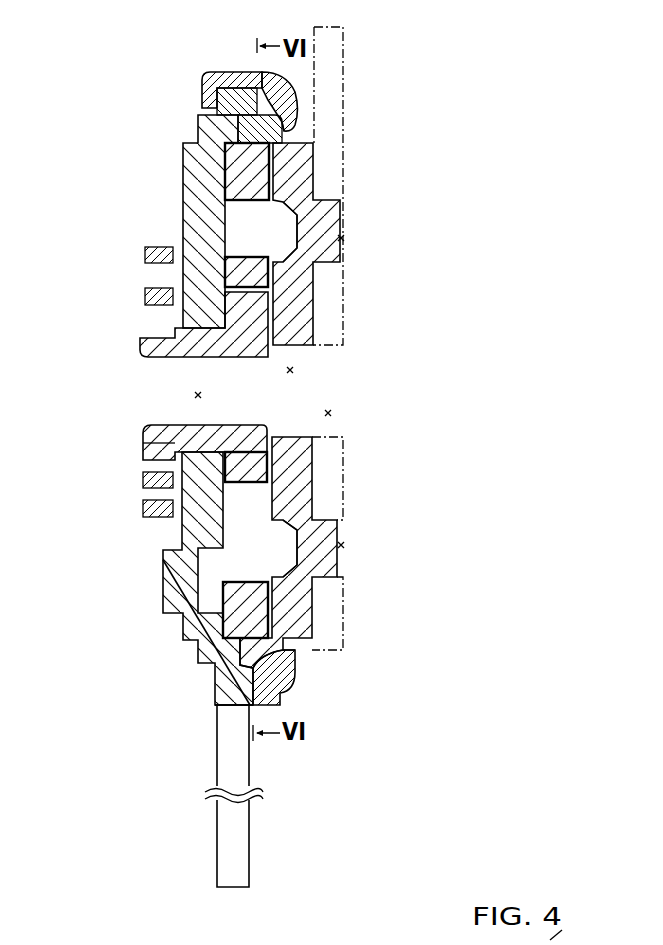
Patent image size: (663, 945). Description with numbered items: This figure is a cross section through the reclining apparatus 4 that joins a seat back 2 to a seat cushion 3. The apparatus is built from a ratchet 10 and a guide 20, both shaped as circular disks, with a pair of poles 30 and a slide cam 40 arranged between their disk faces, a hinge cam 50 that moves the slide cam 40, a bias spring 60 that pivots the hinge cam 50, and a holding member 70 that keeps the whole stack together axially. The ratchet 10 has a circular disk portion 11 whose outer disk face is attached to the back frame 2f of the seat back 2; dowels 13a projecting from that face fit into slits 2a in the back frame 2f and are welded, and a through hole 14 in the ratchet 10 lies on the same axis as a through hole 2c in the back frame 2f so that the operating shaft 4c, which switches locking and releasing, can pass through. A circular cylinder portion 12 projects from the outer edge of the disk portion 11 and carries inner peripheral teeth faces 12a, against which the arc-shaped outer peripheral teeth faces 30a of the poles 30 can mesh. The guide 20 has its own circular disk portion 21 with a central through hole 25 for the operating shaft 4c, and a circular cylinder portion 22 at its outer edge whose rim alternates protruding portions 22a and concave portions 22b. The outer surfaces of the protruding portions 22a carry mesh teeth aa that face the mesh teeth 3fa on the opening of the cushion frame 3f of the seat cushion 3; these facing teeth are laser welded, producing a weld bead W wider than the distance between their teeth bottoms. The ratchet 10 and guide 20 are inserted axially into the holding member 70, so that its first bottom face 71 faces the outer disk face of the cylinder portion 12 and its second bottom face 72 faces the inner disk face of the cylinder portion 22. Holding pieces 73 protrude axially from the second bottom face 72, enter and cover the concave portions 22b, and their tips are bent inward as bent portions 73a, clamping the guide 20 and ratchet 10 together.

The reclining apparatus 4 is at (205, 50).
The concave portions 22b is at (240, 87).
The holding pieces 73 is at (220, 81).
The bent portion 73a is at (210, 97).
The holding member 70 is at (272, 78).
The second bottom face 72 is at (264, 95).
The back frame 2f is at (328, 110).
The seat back 2 is at (375, 338).
The first bottom face 71 is at (288, 128).
The circular cylinder portion 12 is at (264, 133).
The inner peripheral teeth faces 12a is at (274, 150).
The outer peripheral teeth faces 30a is at (359, 393).
The slits 2a is at (345, 236).
The dowels 13a is at (323, 244).
The ratchet 10 is at (312, 326).
The circular disk portion 11 is at (296, 460).
The through hole 14 is at (295, 369).
The poles 30 is at (226, 162).
The guide 20 is at (194, 197).
The circular disk portion 21 is at (200, 237).
The hinge cam 50 is at (160, 352).
The operating shaft 4c is at (150, 340).
The through hole 25 is at (195, 396).
The through hole 2c is at (332, 413).
The bias spring 60 is at (138, 481).
The slide cam 40 is at (244, 485).
The circular cylinder portion 22 is at (228, 672).
The protruding portions 22a is at (224, 694).
The cushion frame 3f is at (235, 828).
The seat cushion 3 is at (213, 796).
The mesh teeth aa is at (230, 708).
The mesh teeth 3fa is at (156, 746).
The weld bead W is at (156, 746).